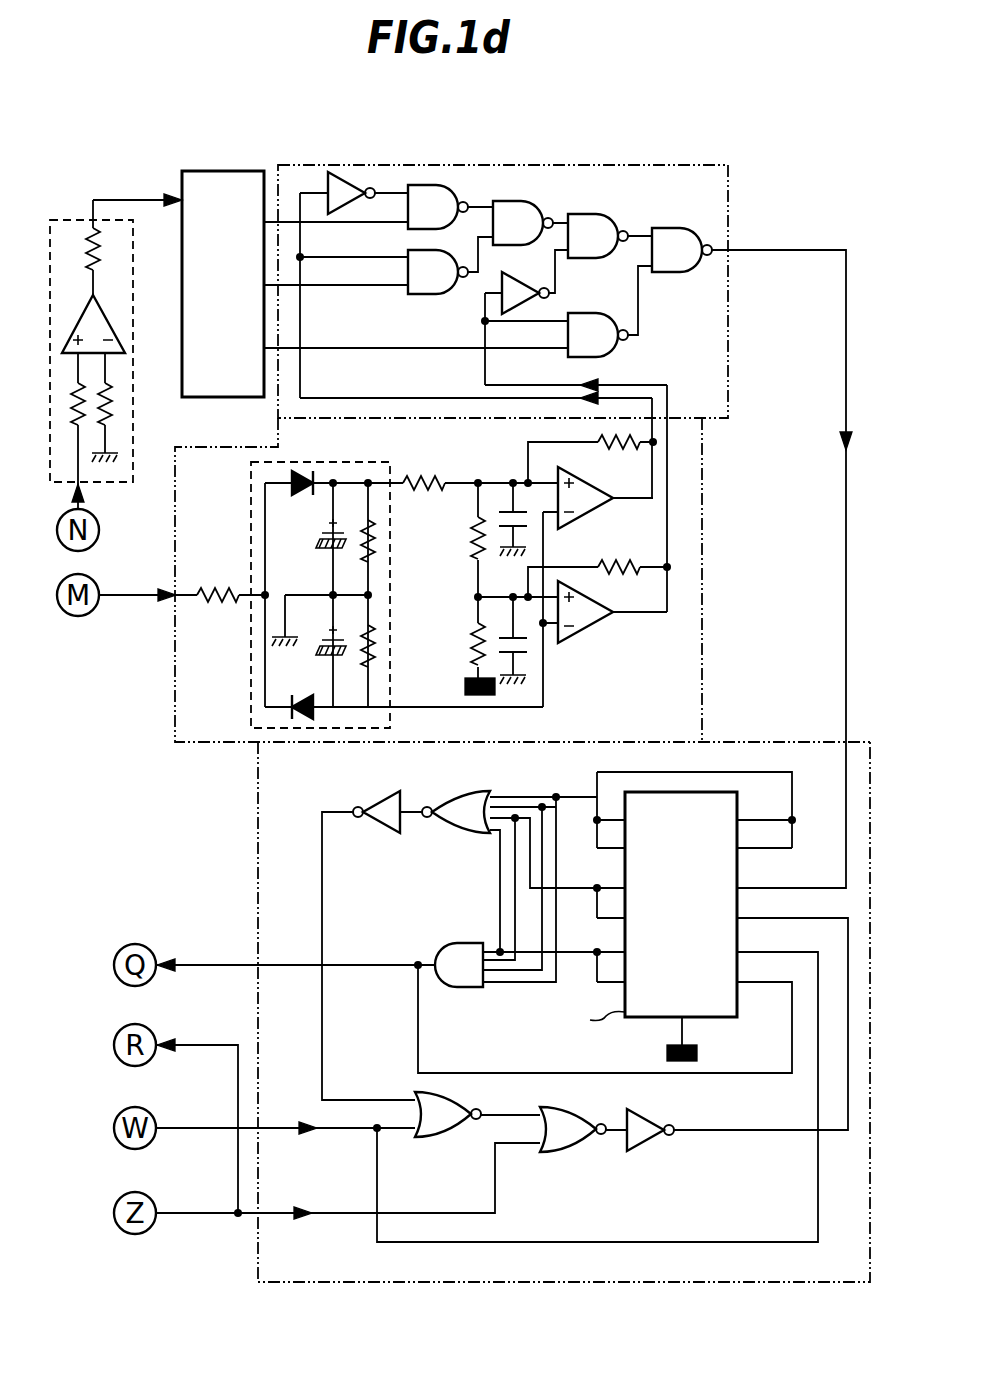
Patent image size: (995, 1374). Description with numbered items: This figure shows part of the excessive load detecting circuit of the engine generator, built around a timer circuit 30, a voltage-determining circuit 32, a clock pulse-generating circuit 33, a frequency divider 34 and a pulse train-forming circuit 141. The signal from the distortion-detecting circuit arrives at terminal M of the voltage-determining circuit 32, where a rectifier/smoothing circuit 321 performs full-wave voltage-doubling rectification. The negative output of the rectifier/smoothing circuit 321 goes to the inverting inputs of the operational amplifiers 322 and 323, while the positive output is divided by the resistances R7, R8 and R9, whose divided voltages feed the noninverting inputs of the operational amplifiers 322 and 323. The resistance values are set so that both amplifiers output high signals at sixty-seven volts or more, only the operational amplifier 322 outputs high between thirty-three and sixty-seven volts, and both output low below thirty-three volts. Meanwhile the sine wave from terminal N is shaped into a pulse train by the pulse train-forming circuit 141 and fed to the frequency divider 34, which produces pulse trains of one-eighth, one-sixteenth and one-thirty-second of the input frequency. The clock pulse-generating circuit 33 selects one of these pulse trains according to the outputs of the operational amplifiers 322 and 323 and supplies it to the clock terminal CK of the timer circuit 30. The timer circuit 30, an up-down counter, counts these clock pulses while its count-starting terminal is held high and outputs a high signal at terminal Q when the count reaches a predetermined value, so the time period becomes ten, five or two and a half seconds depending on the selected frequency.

The timer circuit 30 is at (258, 852).
The voltage-determining circuit 32 is at (484, 580).
The clock pulse-generating circuit 33 is at (728, 212).
The frequency divider 34 is at (222, 171).
The pulse train-forming circuit 141 is at (112, 483).
The rectifier/smoothing circuit 321 is at (333, 462).
The operational amplifier 322 is at (578, 524).
The operational amplifier 323 is at (578, 640).
The resistance R7 is at (424, 500).
The resistance R8 is at (461, 539).
The resistance R9 is at (461, 641).